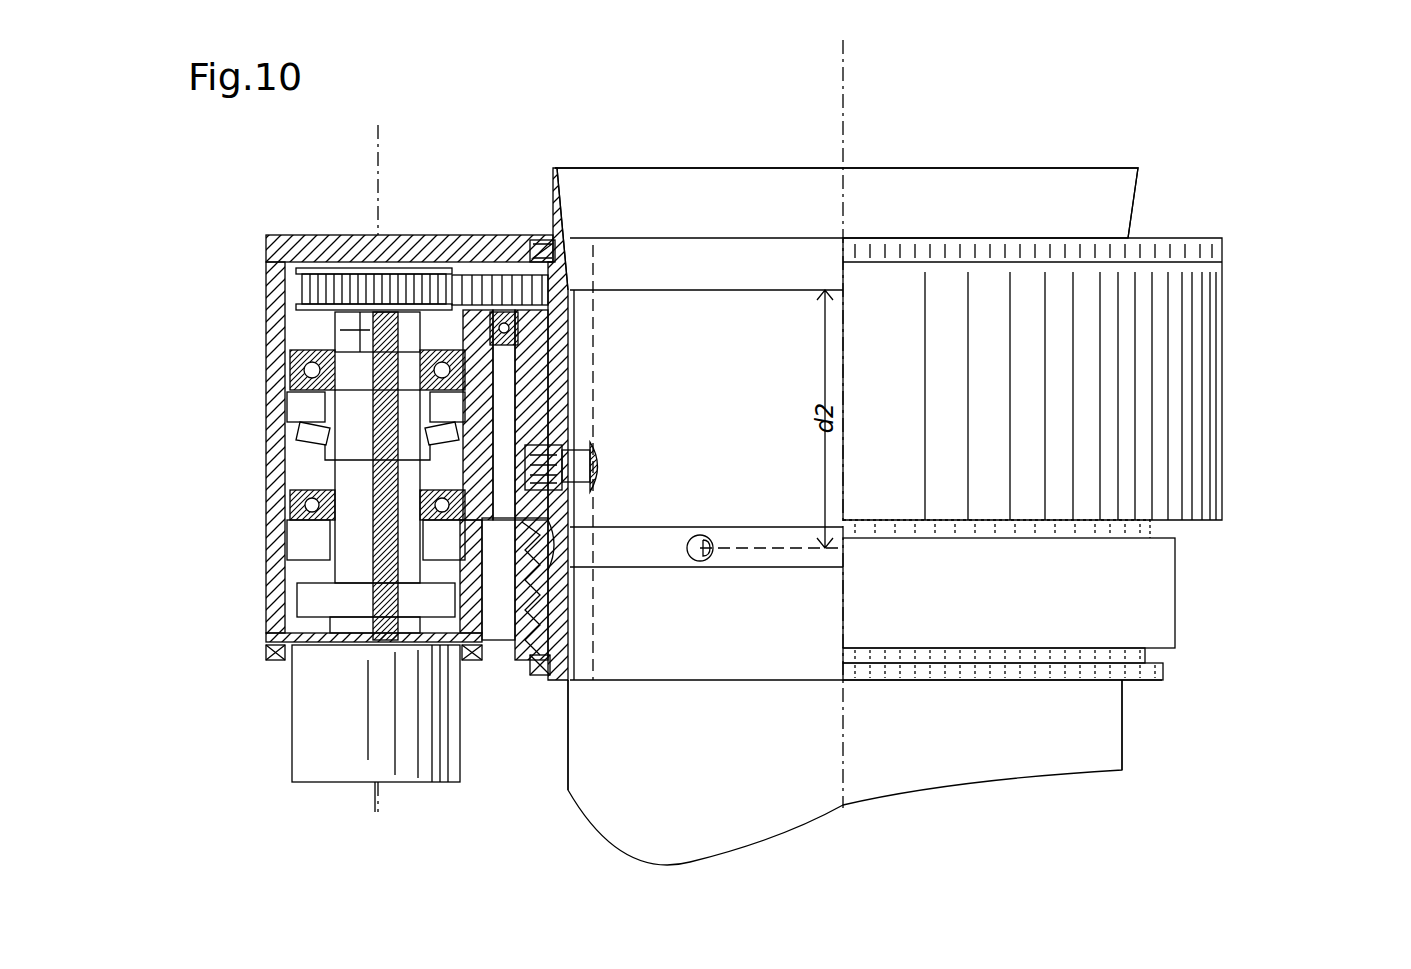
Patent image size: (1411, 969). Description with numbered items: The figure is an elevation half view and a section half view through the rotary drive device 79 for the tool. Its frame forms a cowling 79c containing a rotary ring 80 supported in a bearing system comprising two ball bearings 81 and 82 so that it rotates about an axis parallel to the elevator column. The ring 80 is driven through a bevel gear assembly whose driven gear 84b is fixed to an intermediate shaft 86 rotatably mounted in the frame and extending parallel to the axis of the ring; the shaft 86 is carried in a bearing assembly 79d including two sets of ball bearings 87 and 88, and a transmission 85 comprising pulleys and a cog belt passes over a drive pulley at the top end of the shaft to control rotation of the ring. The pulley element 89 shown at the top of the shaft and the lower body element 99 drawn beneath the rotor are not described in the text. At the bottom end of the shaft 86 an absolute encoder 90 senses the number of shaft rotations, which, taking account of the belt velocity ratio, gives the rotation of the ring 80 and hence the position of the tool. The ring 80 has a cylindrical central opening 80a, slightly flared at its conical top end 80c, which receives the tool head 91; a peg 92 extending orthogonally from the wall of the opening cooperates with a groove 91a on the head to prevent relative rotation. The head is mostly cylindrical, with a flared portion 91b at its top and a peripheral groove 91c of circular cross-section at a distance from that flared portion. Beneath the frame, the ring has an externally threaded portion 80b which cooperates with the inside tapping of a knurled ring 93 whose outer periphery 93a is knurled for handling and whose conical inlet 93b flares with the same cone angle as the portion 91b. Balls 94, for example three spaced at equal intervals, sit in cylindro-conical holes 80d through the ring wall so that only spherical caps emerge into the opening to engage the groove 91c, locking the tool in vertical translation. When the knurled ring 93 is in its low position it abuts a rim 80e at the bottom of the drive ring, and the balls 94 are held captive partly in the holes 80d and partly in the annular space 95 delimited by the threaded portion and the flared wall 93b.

The rotary drive device 79 is at (908, 203).
The cowling 79c is at (1222, 320).
The bearing assembly 79d is at (305, 565).
The ring 80 is at (555, 372).
The cylindrical central opening 80a is at (578, 393).
The threaded portion 80b is at (560, 715).
The conical top end 80c is at (712, 265).
The cylindro-conical holes 80d is at (686, 548).
The rim 80e is at (540, 672).
The ball bearing 81 is at (572, 328).
The ball bearing 82 is at (578, 435).
The driven gear 84b is at (300, 418).
The transmission 85 is at (488, 295).
The intermediate shaft 86 is at (335, 470).
The ball bearings 87 is at (302, 520).
The ball bearings 88 is at (300, 360).
The gear 89 is at (332, 266).
The absolute encoder 90 is at (330, 690).
The tool head 91 is at (572, 637).
The groove 91a is at (600, 415).
The flared portion 91b is at (1003, 195).
The peripheral groove 91c is at (752, 527).
The peg 92 is at (592, 458).
The knurled ring 93 is at (1175, 558).
The outer periphery 93a is at (1150, 598).
The conical inlet 93b is at (548, 545).
The balls 94 is at (700, 562).
The annular space 95 is at (499, 579).
The lower body 99 is at (1120, 740).